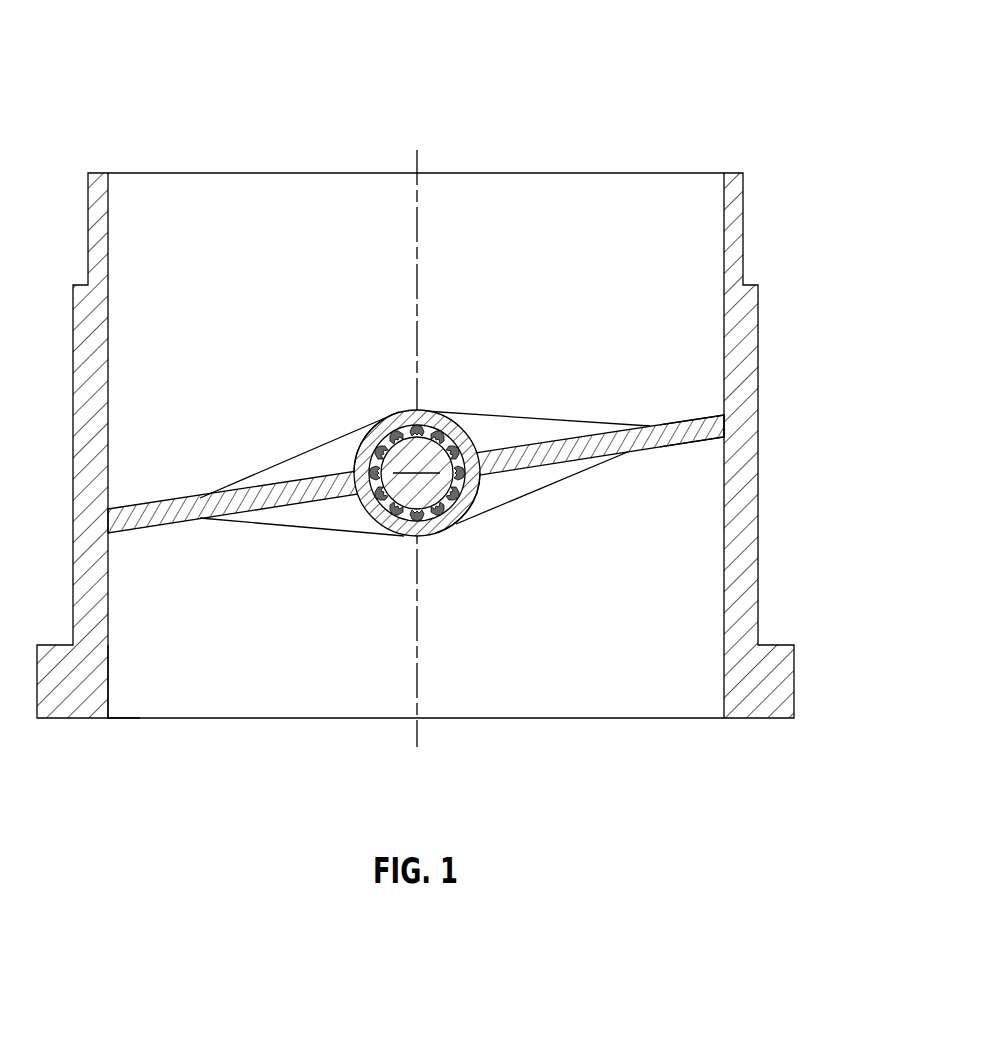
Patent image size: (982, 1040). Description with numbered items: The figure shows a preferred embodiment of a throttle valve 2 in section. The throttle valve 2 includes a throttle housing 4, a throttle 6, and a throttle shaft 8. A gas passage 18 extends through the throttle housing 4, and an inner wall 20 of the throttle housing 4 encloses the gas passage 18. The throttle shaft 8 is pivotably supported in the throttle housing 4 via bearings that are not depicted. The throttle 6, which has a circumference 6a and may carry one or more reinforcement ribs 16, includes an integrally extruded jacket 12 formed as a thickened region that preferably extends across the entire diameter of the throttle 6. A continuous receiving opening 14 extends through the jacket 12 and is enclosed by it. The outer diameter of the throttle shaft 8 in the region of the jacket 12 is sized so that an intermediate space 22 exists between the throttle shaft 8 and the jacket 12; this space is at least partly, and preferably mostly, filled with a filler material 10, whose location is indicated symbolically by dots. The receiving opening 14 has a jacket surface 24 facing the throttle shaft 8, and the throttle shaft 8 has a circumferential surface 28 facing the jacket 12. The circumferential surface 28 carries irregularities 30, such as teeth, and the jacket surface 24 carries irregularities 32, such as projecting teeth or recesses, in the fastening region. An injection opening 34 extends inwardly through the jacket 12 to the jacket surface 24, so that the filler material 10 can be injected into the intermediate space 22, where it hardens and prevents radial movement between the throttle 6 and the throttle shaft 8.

The throttle valve 2 is at (593, 118).
The throttle housing 4 is at (98, 223).
The throttle 6 is at (155, 517).
The circumference 6a is at (727, 423).
The throttle shaft 8 is at (442, 447).
The filler material 10 is at (477, 447).
The jacket 12 is at (463, 523).
The receiving opening 14 is at (390, 515).
The reinforcement rib 16 is at (538, 478).
The gas passage 18 is at (605, 676).
The inner wall 20 is at (108, 657).
The intermediate space 22 is at (427, 518).
The jacket surface 24 is at (360, 517).
The circumferential surface 28 is at (402, 423).
The irregularities 30 is at (407, 517).
The irregularities 32 is at (362, 430).
The injection opening 34 is at (422, 410).